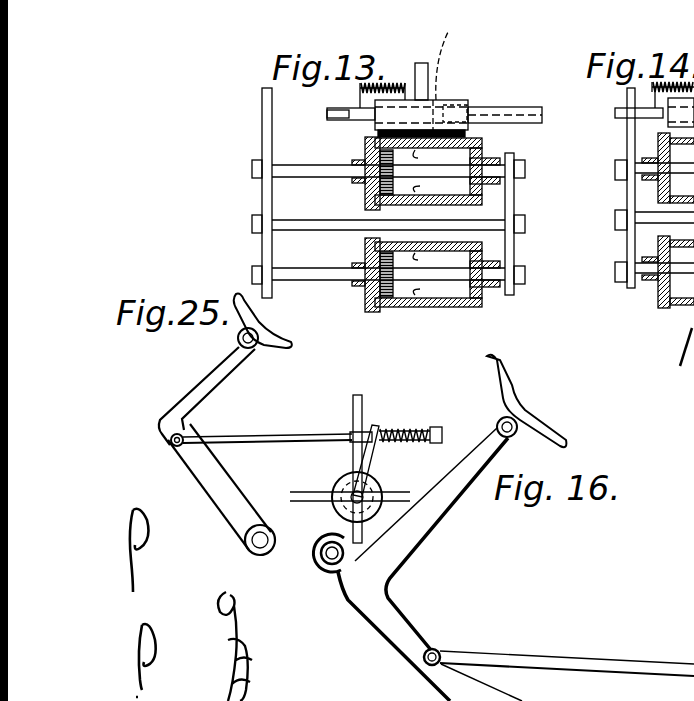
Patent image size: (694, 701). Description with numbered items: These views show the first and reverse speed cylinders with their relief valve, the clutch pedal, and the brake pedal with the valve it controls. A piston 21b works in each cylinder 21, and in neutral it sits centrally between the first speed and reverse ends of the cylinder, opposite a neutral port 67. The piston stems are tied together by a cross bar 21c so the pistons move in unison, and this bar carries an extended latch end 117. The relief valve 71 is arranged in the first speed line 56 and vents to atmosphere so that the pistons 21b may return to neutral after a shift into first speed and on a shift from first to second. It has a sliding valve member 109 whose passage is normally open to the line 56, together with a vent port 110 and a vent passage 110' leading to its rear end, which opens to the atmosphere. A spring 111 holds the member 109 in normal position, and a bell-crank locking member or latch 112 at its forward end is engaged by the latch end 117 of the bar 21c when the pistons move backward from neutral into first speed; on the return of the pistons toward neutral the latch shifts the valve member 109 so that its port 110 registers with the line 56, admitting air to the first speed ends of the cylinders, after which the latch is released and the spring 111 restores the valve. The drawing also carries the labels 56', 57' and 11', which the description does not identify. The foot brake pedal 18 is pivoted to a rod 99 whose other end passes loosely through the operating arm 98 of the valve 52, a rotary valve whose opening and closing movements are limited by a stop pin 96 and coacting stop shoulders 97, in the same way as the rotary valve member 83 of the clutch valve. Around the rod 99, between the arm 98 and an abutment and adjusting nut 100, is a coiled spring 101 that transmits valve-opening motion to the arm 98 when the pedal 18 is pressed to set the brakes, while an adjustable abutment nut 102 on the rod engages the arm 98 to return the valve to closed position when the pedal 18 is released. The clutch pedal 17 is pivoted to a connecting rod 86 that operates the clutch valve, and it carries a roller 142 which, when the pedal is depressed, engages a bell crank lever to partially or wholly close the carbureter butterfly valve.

In FIG. 13, the extended latch end 117 is at (262, 112).
In FIG. 14, the extended latch end 117 is at (627, 101).
In FIG. 13, the cross bar 21c is at (262, 220).
In FIG. 14, the cross bar 21c is at (627, 216).
In FIG. 13, the end plate 56' is at (505, 234).
In FIG. 13, the cylinder 21 is at (372, 246).
In FIG. 14, the cylinder 21 is at (660, 296).
In FIG. 13, the neutral port 67 is at (426, 225).
In FIG. 13, the piston 21b is at (368, 160).
In FIG. 13, the drum member 57' is at (345, 300).
In FIG. 14, the drum member 57' is at (627, 259).
In FIG. 13, the relief valve 71 is at (440, 100).
In FIG. 13, the first speed line 56 is at (412, 71).
In FIG. 13, the shaft line 11' is at (449, 63).
In FIG. 13, the sliding valve member 109 is at (520, 107).
In FIG. 13, the vent port 110 is at (494, 73).
In FIG. 13, the vent passage 110' is at (546, 135).
In FIG. 13, the spring 111 is at (362, 94).
In FIG. 13, the bell-crank locking member 112 is at (345, 118).
In FIG. 14, the bell-crank locking member 112 is at (616, 112).
In FIG. 25, the foot brake pedal 18 is at (208, 378).
In FIG. 25, the rod 99 is at (252, 434).
In FIG. 25, the adjustable abutment nut 102 is at (352, 433).
In FIG. 25, the valve 52 is at (380, 490).
In FIG. 25, the stop pin 96 is at (365, 488).
In FIG. 25, the stop shoulders 97 is at (342, 484).
In FIG. 25, the rotary valve member 83 is at (347, 478).
In FIG. 25, the coiled spring 101 is at (405, 428).
In FIG. 25, the operating arm 98 is at (372, 428).
In FIG. 25, the abutment and adjusting nut 100 is at (442, 430).
In FIG. 25, the clutch pedal 17 is at (413, 542).
In FIG. 25, the roller 142 is at (316, 560).
In FIG. 25, the connecting rod 86 is at (639, 664).